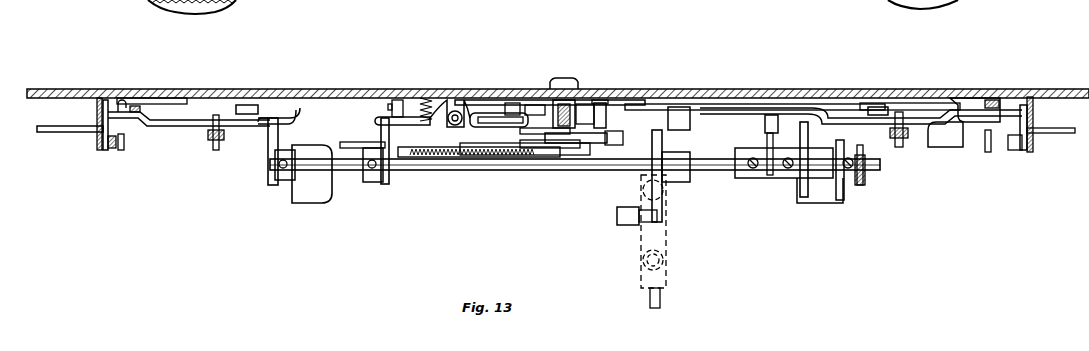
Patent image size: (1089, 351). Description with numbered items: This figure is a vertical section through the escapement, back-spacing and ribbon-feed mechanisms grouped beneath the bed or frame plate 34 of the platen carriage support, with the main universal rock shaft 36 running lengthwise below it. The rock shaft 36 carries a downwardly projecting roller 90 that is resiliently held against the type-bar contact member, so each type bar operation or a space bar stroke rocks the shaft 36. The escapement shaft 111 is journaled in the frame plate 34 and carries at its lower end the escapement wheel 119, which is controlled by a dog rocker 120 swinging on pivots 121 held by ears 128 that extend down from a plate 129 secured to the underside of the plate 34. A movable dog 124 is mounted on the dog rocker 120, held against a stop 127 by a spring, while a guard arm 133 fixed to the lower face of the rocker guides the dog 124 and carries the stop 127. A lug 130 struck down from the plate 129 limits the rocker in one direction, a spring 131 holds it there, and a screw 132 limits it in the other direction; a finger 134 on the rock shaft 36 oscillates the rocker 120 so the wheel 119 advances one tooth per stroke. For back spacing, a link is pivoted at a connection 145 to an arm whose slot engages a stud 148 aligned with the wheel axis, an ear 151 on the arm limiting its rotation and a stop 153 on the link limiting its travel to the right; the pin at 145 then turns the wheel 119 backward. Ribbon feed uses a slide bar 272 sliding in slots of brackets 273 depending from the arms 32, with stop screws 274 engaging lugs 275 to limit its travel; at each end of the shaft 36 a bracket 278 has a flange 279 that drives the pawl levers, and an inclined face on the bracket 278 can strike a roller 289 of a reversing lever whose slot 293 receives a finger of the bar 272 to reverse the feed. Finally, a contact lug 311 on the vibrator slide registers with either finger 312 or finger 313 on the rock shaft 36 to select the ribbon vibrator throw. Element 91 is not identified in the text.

The arm 32 is at (95, 110).
The frame plate 34 is at (320, 88).
The rock shaft 36 is at (432, 172).
The roller 90 is at (620, 226).
The lever arm 91 is at (666, 208).
The escapement shaft 111 is at (578, 128).
The escapement wheel 119 is at (556, 108).
The dog rocker 120 is at (482, 96).
The pivot 121 is at (452, 128).
The movable dog 124 is at (507, 130).
The stop 127 is at (528, 115).
The ear 128 is at (447, 93).
The plate 129 is at (515, 98).
The lug 130 is at (525, 100).
The spring 131 is at (426, 92).
The screw 132 is at (393, 89).
The arm 133 is at (486, 130).
The finger 134 is at (365, 142).
The pivotal connection 145 is at (610, 118).
The stud 148 is at (584, 102).
The ear 151 is at (612, 150).
The stop 153 is at (596, 106).
The slide bar 272 is at (55, 132).
The bracket 273 is at (104, 135).
The stop screw 274 is at (116, 142).
The lug 275 is at (126, 141).
The bracket 278 is at (276, 142).
The flange 279 is at (245, 108).
The roller 289 is at (222, 137).
The slot 293 is at (216, 148).
The contact lug 311 is at (770, 115).
The finger 312 is at (770, 140).
The finger 313 is at (802, 125).